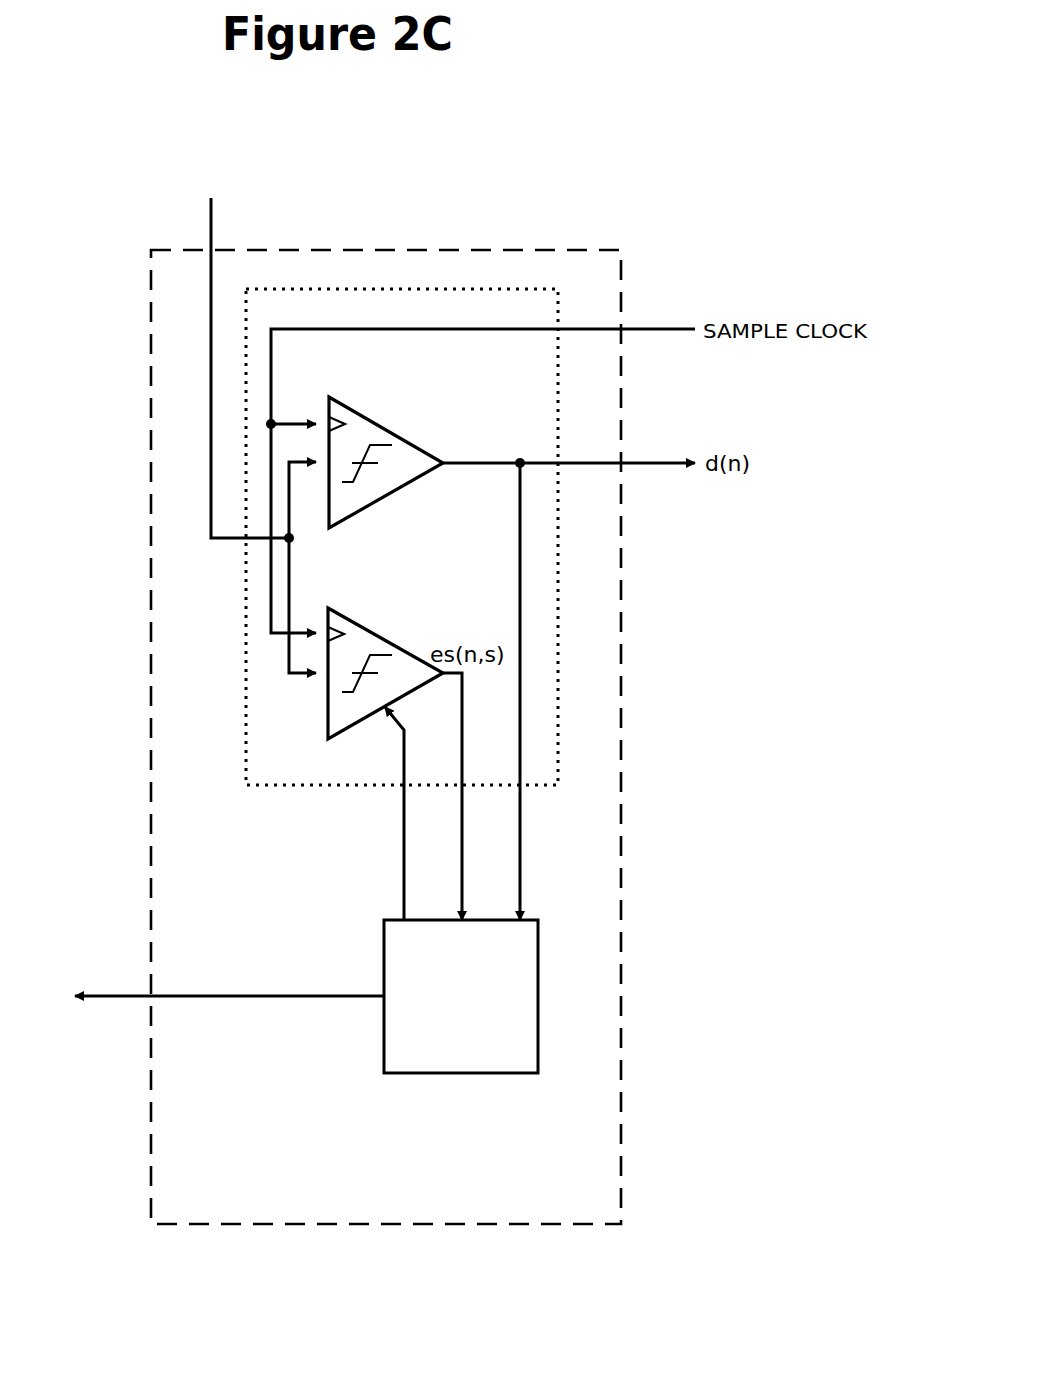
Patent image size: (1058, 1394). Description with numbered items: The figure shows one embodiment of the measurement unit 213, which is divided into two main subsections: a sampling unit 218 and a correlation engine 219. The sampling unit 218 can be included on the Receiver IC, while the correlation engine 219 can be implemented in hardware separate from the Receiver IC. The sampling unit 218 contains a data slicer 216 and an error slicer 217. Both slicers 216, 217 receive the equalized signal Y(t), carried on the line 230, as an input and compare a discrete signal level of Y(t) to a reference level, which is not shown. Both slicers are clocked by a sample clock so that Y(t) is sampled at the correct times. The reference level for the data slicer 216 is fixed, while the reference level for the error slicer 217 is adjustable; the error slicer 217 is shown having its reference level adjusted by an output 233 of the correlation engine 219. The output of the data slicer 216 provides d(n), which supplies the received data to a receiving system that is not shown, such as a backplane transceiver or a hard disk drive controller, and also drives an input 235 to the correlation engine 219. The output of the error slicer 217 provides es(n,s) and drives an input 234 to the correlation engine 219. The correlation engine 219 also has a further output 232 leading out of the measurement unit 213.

The measurement unit 213 is at (349, 1224).
The data slicer 216 is at (368, 415).
The error slicer 217 is at (368, 624).
The sampling unit 218 is at (288, 785).
The correlation engine 219 is at (460, 1073).
The input signal Y(t) line 230 is at (241, 415).
The correlation engine output 232 is at (251, 996).
The output of correlation engine 233 is at (407, 828).
The input to correlation engine 234 is at (463, 811).
The input to correlation engine 235 is at (513, 706).